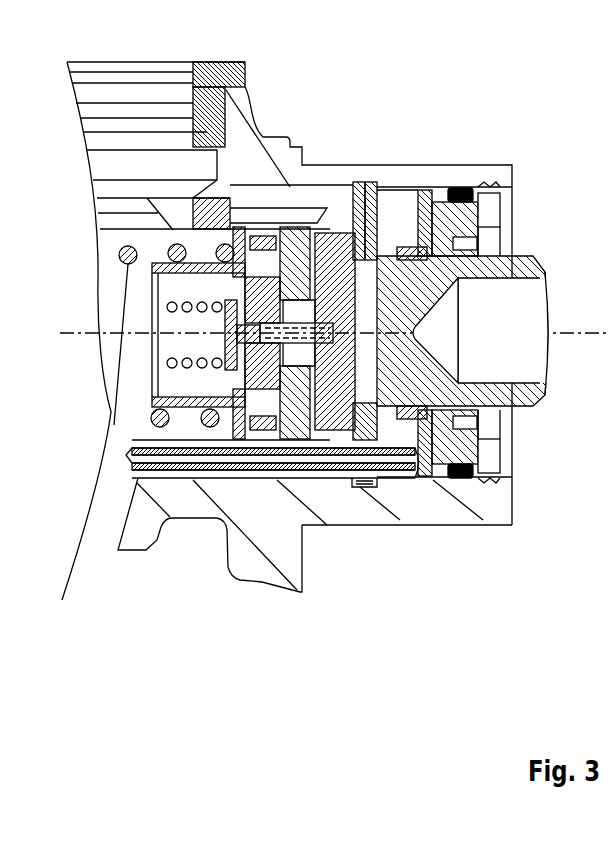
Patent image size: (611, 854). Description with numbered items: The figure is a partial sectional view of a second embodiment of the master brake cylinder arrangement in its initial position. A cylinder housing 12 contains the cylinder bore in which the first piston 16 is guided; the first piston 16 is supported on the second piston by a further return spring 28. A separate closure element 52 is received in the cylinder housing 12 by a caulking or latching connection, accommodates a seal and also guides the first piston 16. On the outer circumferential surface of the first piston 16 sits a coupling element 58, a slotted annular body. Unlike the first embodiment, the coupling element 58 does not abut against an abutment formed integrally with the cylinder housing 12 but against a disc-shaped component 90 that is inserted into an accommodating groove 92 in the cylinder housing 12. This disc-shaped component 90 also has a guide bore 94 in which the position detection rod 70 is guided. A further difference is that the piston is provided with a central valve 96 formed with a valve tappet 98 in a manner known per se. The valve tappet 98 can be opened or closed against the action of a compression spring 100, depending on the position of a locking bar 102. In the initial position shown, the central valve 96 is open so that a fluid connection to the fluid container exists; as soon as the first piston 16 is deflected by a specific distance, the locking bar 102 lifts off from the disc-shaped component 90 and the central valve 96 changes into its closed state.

The cylinder housing 12 is at (258, 178).
The first piston 16 is at (522, 255).
The further return spring 28 is at (66, 592).
The closure element 52 is at (437, 190).
The coupling element 58 is at (422, 432).
The position detection rod 70 is at (270, 594).
The disc-shaped component 90 is at (363, 193).
The accommodating groove 92 is at (372, 183).
The guide bore 94 is at (360, 489).
The central valve 96 is at (195, 378).
The valve tappet 98 is at (230, 372).
The compression spring 100 is at (160, 428).
The locking bar 102 is at (340, 432).